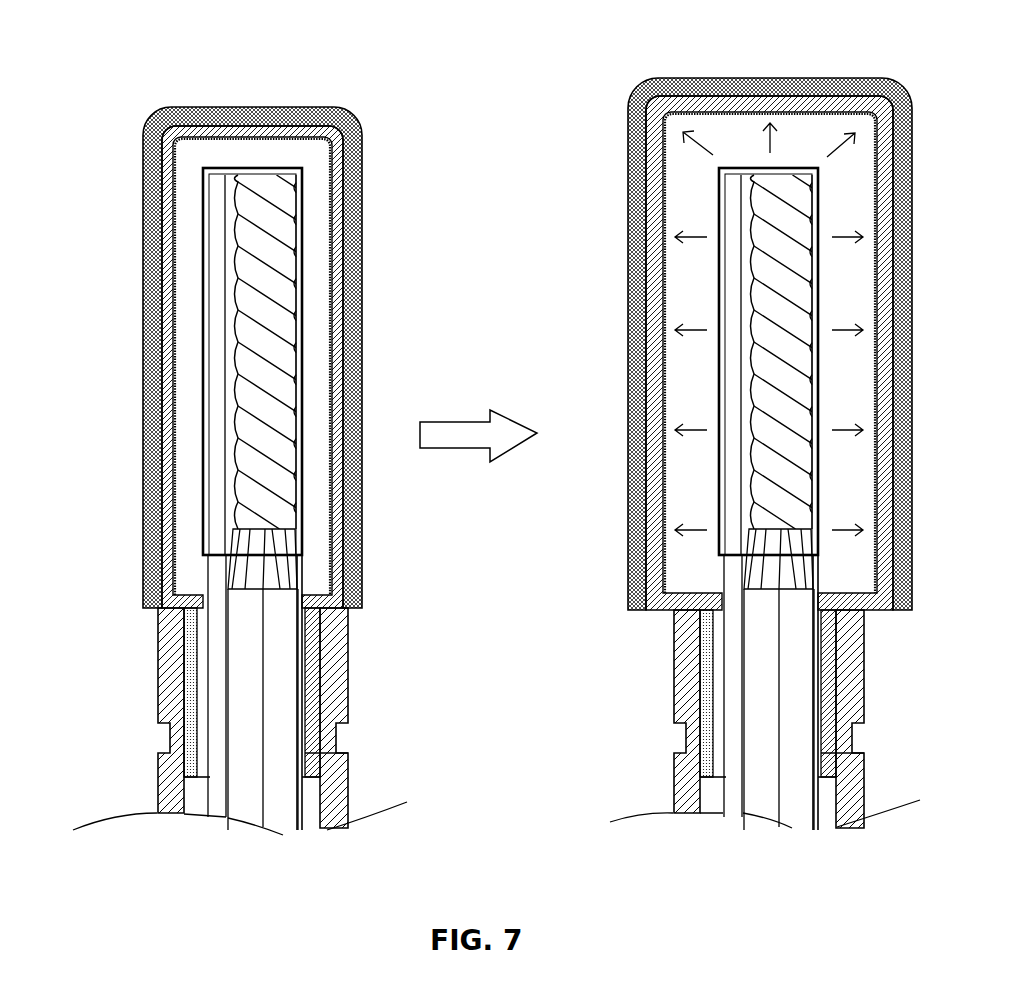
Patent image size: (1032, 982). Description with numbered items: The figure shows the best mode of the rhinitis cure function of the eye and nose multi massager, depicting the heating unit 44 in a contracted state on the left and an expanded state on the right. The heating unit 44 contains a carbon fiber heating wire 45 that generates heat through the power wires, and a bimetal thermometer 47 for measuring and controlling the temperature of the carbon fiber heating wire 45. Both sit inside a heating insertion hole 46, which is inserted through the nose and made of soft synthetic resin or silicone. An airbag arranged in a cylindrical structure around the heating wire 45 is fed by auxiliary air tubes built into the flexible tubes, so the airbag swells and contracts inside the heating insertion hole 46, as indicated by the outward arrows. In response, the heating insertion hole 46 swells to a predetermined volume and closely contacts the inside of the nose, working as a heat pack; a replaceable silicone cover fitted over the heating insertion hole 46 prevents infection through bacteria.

The heating unit 44 is at (88, 153).
The carbon fiber heating wire 45 is at (237, 212).
The heating insertion hole 46 is at (156, 167).
The bimetal thermometer 47 is at (218, 248).